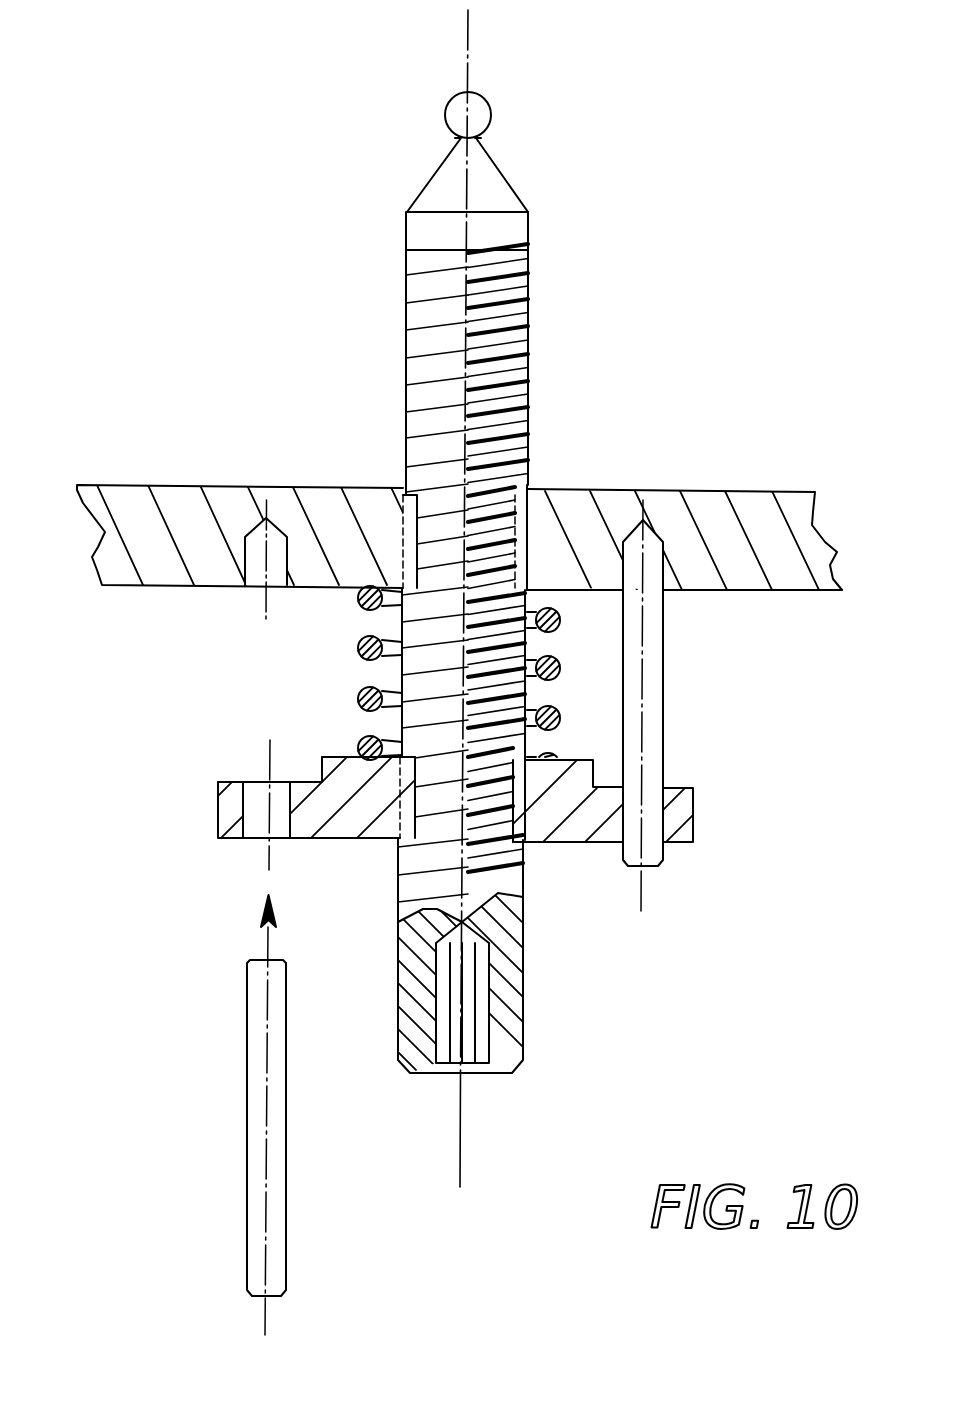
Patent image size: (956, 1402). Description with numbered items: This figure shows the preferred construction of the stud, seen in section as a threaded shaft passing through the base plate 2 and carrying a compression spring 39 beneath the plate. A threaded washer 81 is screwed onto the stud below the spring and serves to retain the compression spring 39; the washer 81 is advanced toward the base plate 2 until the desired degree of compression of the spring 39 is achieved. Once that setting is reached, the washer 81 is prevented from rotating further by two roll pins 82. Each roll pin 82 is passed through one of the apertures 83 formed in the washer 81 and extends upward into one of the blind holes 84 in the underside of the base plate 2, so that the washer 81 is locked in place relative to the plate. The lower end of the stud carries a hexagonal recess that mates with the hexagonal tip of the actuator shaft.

The base plate 2 is at (668, 508).
The compression spring 39 is at (558, 726).
The threaded washer 81 is at (563, 828).
The roll pins 82 is at (655, 678).
The apertures 83 is at (250, 797).
The blind holes 84 is at (275, 553).